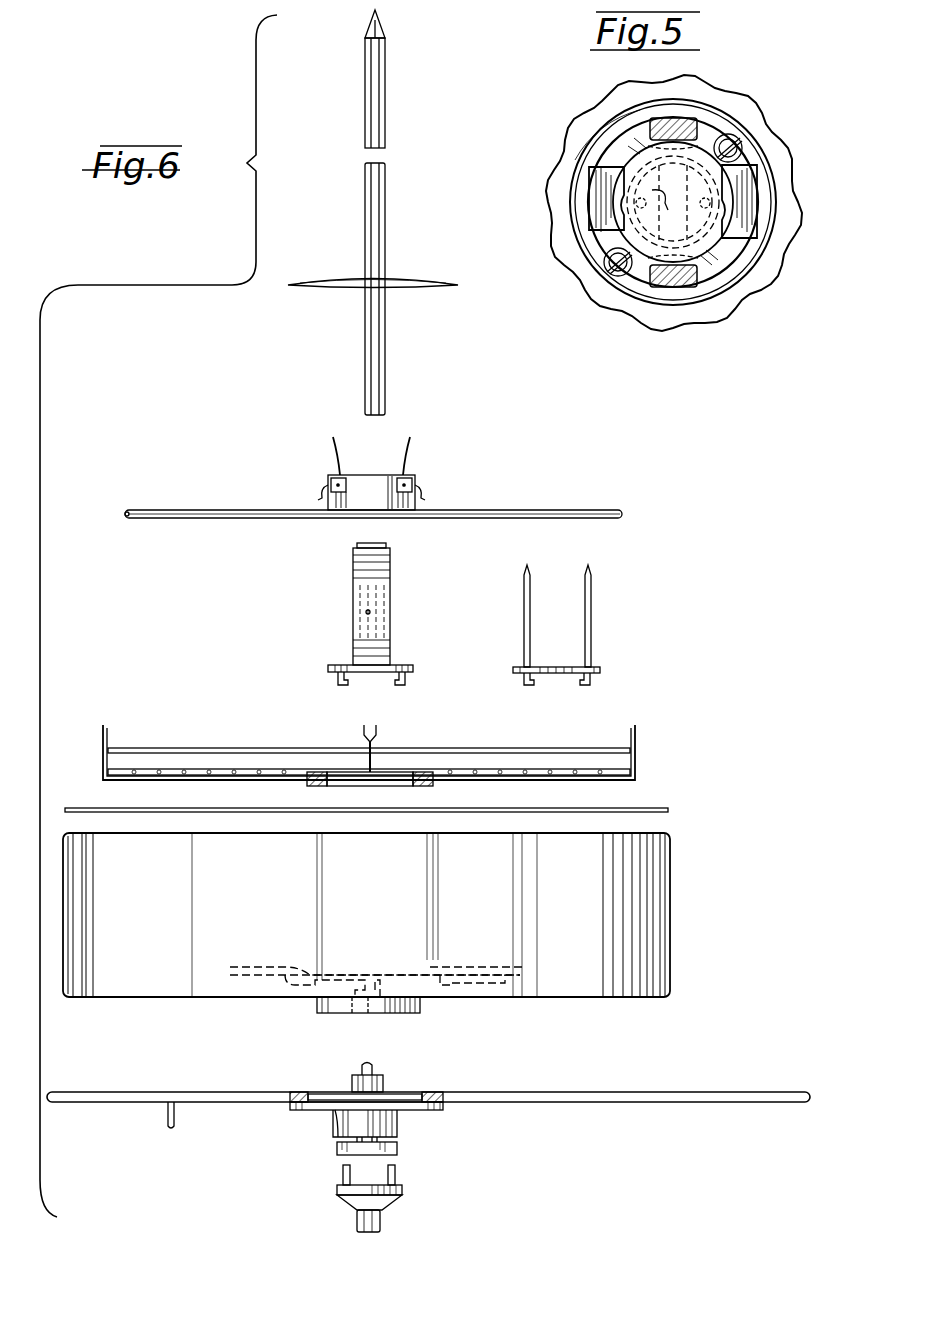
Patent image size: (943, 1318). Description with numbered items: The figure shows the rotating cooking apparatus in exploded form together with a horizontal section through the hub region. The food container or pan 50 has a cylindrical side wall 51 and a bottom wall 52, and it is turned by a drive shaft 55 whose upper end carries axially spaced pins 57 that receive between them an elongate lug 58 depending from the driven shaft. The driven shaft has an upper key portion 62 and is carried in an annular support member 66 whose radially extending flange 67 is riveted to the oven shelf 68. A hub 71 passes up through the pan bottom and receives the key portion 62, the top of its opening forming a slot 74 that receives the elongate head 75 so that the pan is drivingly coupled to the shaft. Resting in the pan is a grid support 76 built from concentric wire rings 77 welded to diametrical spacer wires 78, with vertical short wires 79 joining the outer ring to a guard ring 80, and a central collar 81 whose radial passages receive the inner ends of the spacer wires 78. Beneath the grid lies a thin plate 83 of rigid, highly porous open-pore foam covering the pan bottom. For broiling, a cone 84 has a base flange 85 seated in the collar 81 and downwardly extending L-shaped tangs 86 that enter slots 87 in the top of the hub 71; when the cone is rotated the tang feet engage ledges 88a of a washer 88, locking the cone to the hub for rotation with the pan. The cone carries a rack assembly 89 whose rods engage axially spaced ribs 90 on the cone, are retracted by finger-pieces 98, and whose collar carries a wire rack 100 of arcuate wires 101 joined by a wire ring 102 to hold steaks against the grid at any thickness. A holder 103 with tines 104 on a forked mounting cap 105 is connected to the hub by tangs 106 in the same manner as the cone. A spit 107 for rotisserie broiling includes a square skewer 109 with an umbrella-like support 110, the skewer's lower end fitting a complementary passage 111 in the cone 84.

In FIG. 5, the food container or pan 50 is at (604, 96).
In FIG. 6, the food container or pan 50 is at (678, 842).
In FIG. 6, the cylindrical side wall 51 is at (662, 917).
In FIG. 5, the bottom wall 52 is at (771, 140).
In FIG. 6, the bottom wall 52 is at (492, 980).
In FIG. 6, the drive shaft 55 is at (357, 1219).
In FIG. 6, the pins 57 is at (396, 1175).
In FIG. 6, the elongate lug 58 is at (338, 1150).
In FIG. 6, the key portion 62 is at (350, 1084).
In FIG. 6, the annular support member 66 is at (398, 1118).
In FIG. 6, the radially extending flange 67 is at (445, 1108).
In FIG. 6, the oven shelf 68 is at (292, 1112).
In FIG. 6, the hub 71 is at (420, 1010).
In FIG. 5, the slot 74 is at (640, 186).
In FIG. 6, the slot 74 is at (360, 1012).
In FIG. 6, the elongate head 75 is at (370, 1066).
In FIG. 6, the grid support 76 is at (650, 732).
In FIG. 6, the wire rings 77 is at (528, 770).
In FIG. 6, the spacer wires 78 is at (165, 782).
In FIG. 6, the vertical short wires 79 is at (380, 735).
In FIG. 6, the guard ring 80 is at (228, 748).
In FIG. 6, the collar 81 is at (420, 785).
In FIG. 6, the thin plate 83 is at (95, 806).
In FIG. 6, the cone 84 is at (352, 568).
In FIG. 6, the base flange 85 is at (400, 664).
In FIG. 5, the L-shaped tangs 86 is at (690, 120).
In FIG. 6, the L-shaped tangs 86 is at (334, 682).
In FIG. 5, the slots 87 is at (595, 198).
In FIG. 5, the washer 88 is at (592, 253).
In FIG. 5, the ledges 88a is at (632, 160).
In FIG. 6, the rack assembly 89 is at (432, 470).
In FIG. 6, the ribs 90 is at (390, 560).
In FIG. 6, the finger-pieces 98 is at (402, 455).
In FIG. 6, the wire rack 100 is at (558, 506).
In FIG. 6, the arcuate wires 101 is at (216, 510).
In FIG. 6, the wire ring 102 is at (130, 520).
In FIG. 6, the holder 103 is at (628, 604).
In FIG. 6, the tines 104 is at (584, 595).
In FIG. 6, the forked mounting cap 105 is at (595, 666).
In FIG. 6, the tangs 106 is at (580, 686).
In FIG. 6, the spit 107 is at (398, 88).
In FIG. 6, the skewer 109 is at (385, 222).
In FIG. 6, the umbrella-like support 110 is at (345, 285).
In FIG. 6, the passage 111 is at (366, 610).